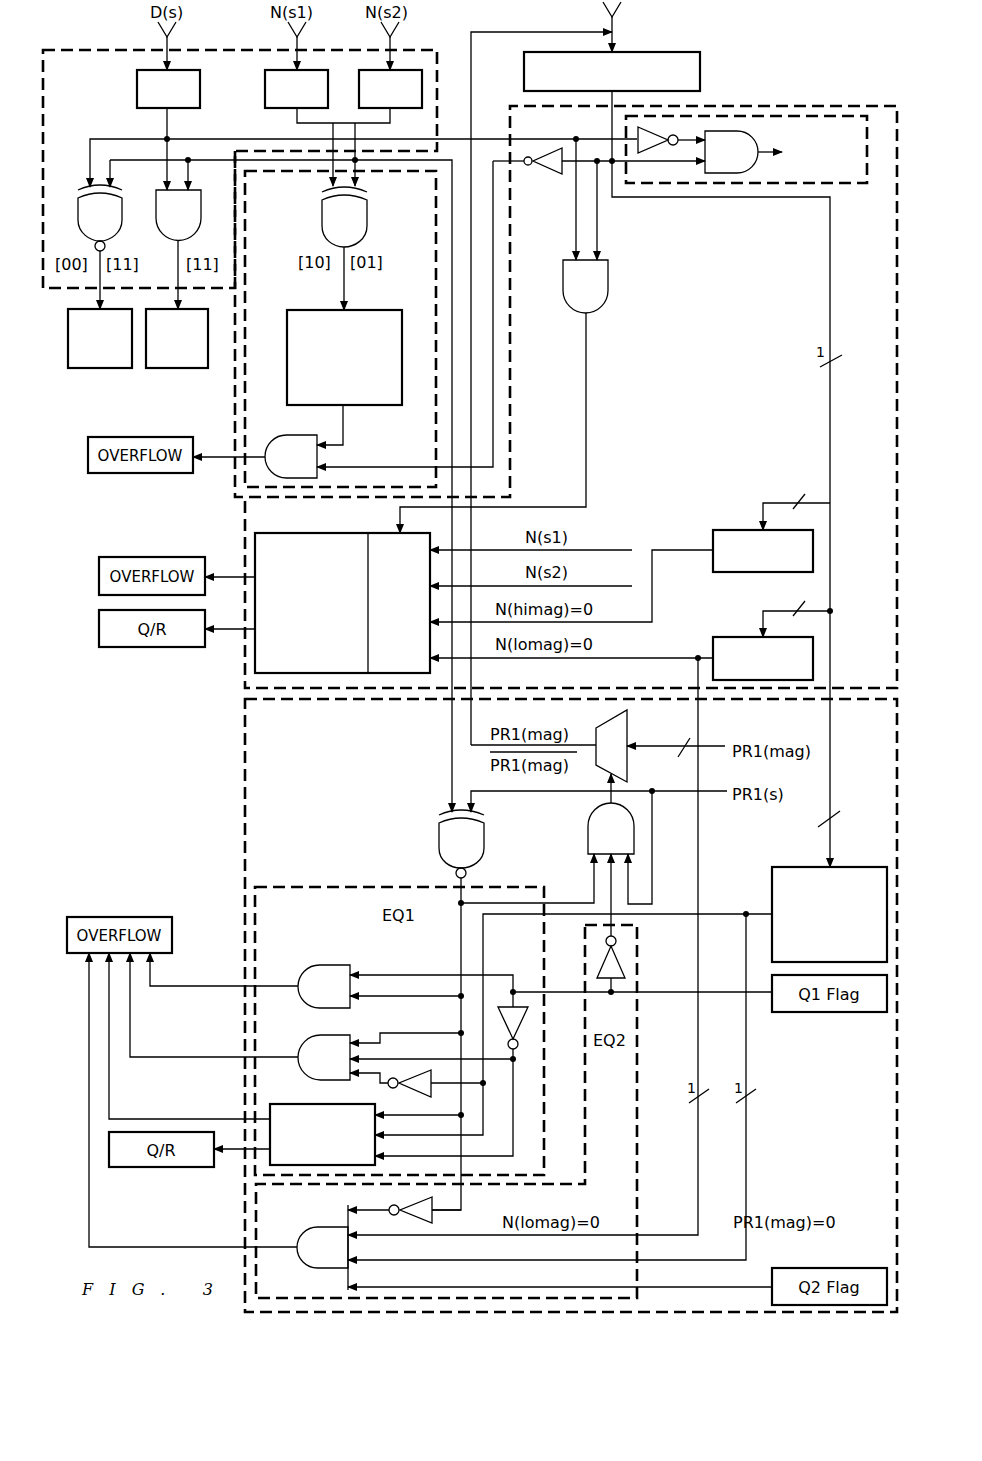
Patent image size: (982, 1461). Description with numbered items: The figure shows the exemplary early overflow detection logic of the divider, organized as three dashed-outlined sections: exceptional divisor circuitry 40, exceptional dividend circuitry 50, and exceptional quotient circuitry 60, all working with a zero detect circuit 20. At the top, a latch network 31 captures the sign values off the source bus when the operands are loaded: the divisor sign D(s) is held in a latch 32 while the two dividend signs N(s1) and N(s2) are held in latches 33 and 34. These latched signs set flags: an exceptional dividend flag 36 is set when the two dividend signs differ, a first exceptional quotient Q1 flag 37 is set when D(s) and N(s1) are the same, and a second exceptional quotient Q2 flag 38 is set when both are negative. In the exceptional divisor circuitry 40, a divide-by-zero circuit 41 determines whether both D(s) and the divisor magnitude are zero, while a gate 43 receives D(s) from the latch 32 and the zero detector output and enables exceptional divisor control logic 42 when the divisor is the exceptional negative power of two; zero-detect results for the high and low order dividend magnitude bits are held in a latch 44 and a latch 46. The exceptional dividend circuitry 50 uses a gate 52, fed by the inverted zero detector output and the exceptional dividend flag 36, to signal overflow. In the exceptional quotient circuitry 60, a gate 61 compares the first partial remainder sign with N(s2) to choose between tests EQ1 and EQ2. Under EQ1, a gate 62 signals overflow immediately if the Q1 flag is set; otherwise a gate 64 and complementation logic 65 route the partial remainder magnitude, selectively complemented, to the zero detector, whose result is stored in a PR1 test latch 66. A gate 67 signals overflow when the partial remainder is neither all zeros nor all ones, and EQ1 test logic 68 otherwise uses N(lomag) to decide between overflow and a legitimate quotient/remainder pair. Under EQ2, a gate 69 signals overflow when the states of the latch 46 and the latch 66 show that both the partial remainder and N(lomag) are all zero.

The zero detect circuit 20 is at (700, 70).
The latch network 31 is at (104, 49).
The latch 32 is at (137, 92).
The latch 33 is at (265, 92).
The latch 34 is at (414, 70).
The exceptional dividend flag 36 is at (373, 407).
The first exceptional quotient Q1 flag 37 is at (90, 369).
The second exceptional quotient Q2 flag 38 is at (167, 369).
The exceptional divisor circuitry 40 is at (716, 369).
The divide-by-zero circuit 41 is at (842, 183).
The exceptional divisor control logic 42 is at (300, 649).
The gate 43 is at (608, 280).
The latch 44 is at (738, 529).
The latch 46 is at (738, 636).
The exceptional dividend circuitry 50 is at (302, 220).
The gate 52 is at (278, 436).
The exceptional quotient circuitry 60 is at (329, 757).
The gate 61 is at (439, 845).
The gate 62 is at (303, 964).
The gate 64 is at (627, 764).
The complementation logic 65 is at (588, 828).
The PR1 test latch 66 is at (862, 866).
The gate 67 is at (303, 1036).
The EQ1 test logic 68 is at (303, 1104).
The gate 69 is at (305, 1228).